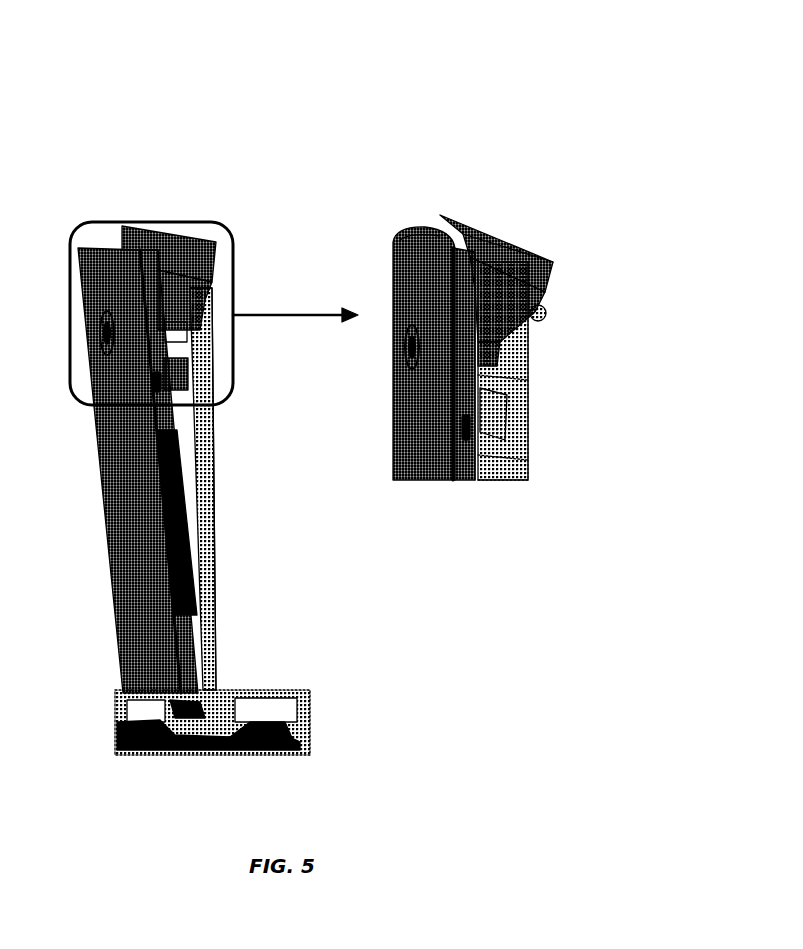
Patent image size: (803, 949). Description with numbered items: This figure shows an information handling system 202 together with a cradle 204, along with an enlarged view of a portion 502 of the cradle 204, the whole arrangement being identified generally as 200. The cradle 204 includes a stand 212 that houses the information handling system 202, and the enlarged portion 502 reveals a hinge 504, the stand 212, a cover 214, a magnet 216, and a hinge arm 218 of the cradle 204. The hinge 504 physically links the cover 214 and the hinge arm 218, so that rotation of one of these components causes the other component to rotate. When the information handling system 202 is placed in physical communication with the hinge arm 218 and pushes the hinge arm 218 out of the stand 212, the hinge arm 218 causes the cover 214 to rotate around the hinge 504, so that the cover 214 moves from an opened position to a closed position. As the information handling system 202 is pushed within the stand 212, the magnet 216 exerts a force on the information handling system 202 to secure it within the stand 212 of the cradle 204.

The device 200 is at (270, 92).
The information handling system 202 is at (108, 486).
The cradle 204 is at (254, 566).
The stand 212 is at (198, 485).
The cover 214 is at (483, 242).
The magnet 216 is at (485, 428).
The hinge arm 218 is at (500, 338).
The portion 502 is at (177, 222).
The hinge 504 is at (541, 312).